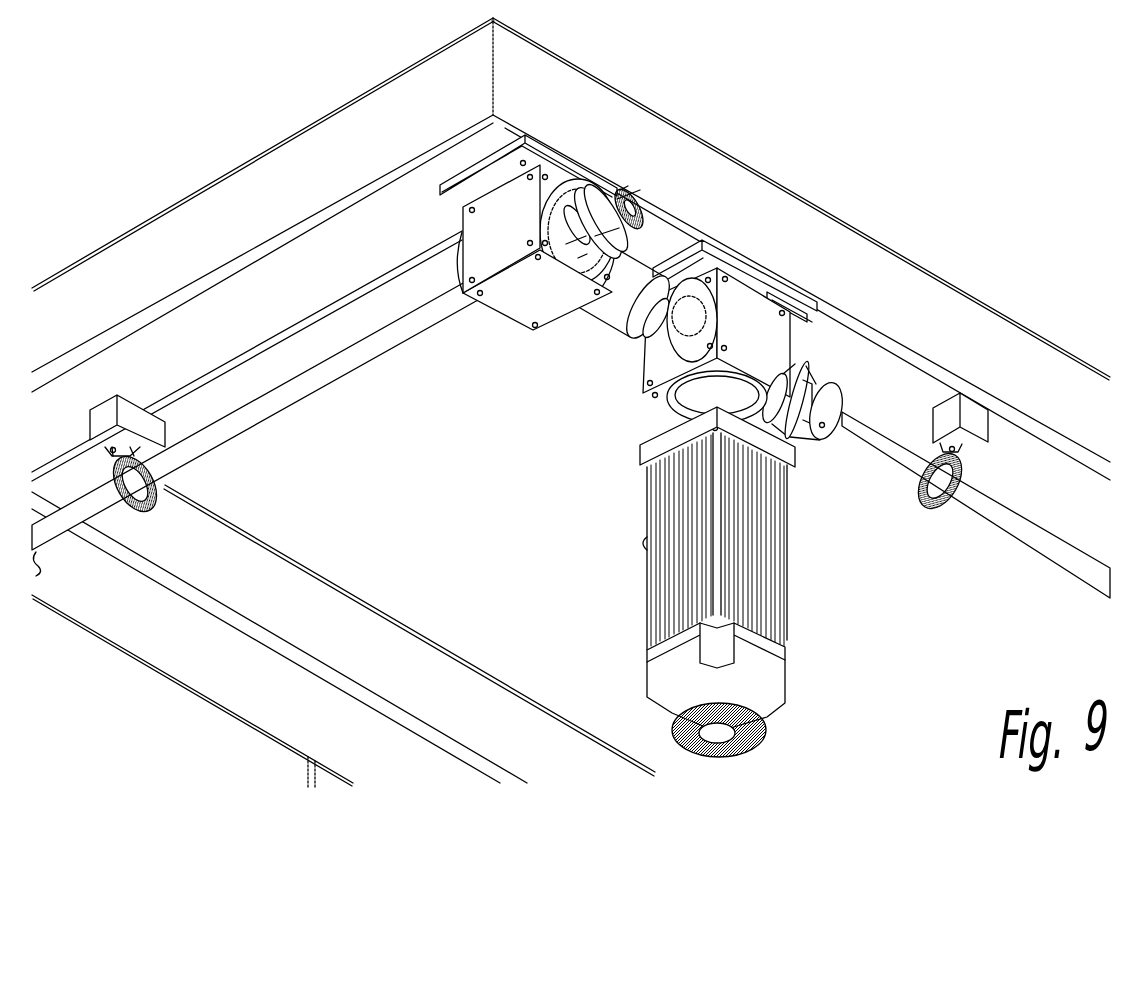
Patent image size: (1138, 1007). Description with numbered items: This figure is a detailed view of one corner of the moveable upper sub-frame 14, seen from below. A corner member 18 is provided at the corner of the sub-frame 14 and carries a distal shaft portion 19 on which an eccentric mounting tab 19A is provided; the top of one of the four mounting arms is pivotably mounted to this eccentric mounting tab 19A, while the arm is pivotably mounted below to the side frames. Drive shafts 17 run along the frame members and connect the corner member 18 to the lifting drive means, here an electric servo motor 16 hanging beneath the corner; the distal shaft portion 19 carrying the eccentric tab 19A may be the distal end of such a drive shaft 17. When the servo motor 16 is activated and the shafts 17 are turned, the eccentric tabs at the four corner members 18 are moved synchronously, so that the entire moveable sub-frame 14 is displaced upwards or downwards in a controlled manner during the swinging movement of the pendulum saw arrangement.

The moveable sub-frame 14 is at (807, 217).
The servo motor 16 is at (790, 548).
The drive shaft 17 is at (342, 386).
The corner member 18 is at (520, 308).
The distal shaft portion 19 is at (598, 190).
The eccentric mounting tab 19A is at (623, 187).